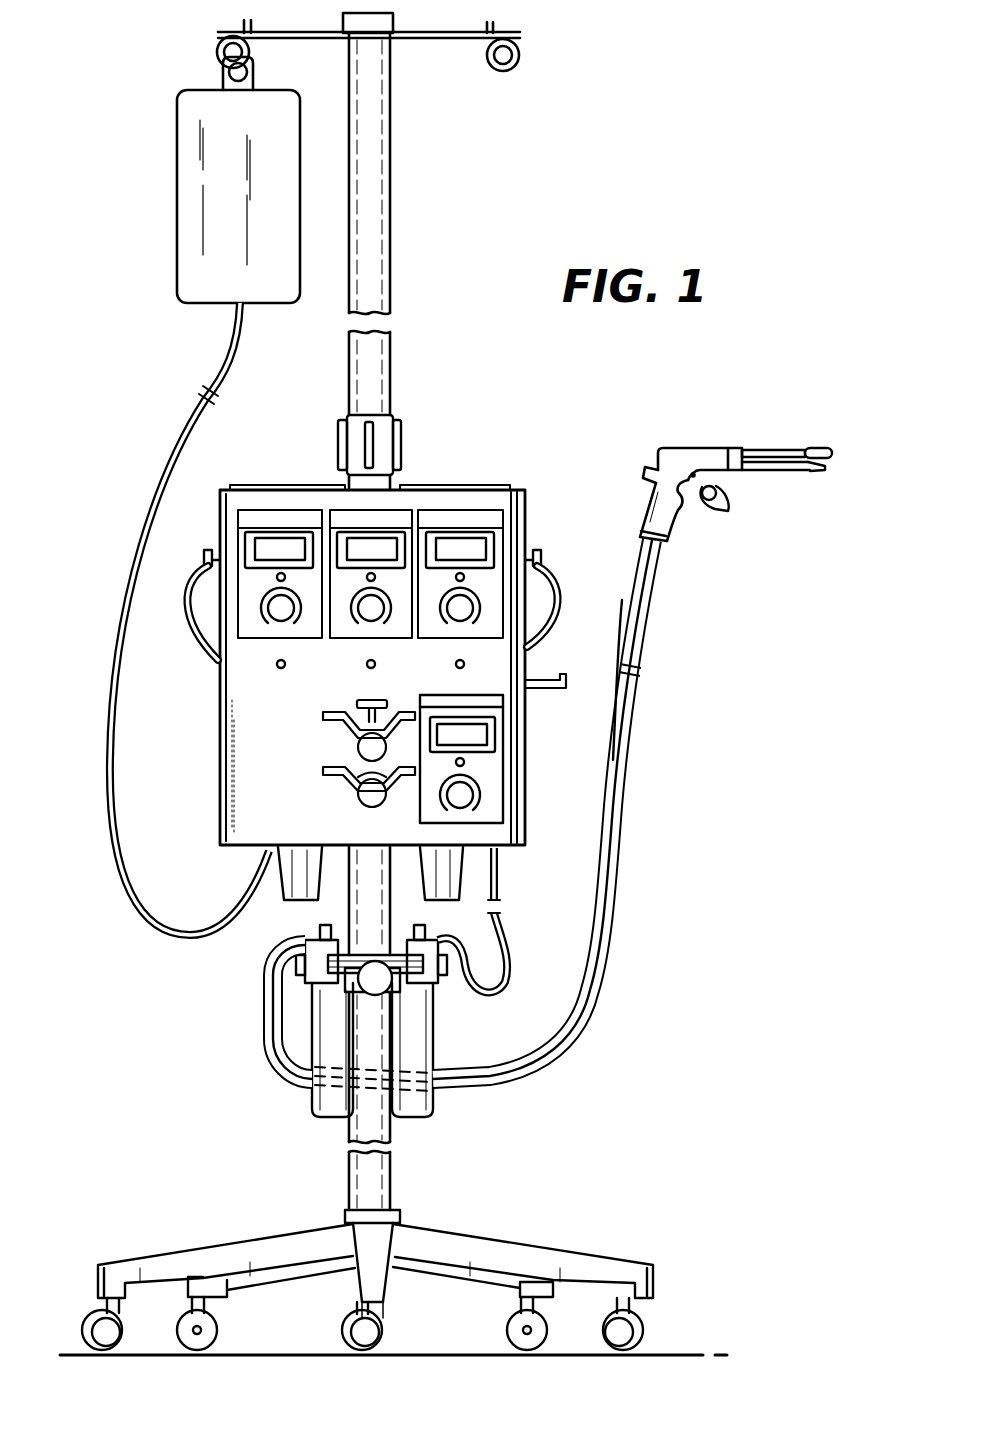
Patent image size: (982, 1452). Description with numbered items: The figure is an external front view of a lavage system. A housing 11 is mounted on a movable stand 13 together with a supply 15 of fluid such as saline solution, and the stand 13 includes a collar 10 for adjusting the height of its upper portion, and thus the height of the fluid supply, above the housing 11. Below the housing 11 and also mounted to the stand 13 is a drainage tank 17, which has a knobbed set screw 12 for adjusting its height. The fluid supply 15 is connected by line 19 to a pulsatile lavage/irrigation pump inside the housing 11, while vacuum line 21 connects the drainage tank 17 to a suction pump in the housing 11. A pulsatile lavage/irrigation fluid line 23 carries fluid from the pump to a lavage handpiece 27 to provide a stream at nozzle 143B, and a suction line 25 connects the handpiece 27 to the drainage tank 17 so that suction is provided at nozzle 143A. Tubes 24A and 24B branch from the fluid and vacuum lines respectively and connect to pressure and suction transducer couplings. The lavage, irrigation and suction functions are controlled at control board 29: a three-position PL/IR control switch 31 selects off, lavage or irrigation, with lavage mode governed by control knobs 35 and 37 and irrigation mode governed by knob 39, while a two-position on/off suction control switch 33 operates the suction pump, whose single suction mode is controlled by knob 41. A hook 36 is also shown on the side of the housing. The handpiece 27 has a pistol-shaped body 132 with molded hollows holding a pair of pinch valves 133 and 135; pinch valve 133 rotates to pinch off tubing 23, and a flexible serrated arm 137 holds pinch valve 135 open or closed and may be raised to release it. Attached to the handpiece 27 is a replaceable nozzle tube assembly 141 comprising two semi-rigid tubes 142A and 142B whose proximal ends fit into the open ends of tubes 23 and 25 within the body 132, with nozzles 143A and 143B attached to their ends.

The collar 10 is at (396, 418).
The housing 11 is at (478, 484).
The knobbed set screw 12 is at (380, 985).
The movable stand 13 is at (398, 236).
The fluid supply 15 is at (176, 156).
The drainage tank 17 is at (442, 1108).
The line 19 is at (182, 428).
The vacuum line 21 is at (511, 938).
The pulsatile lavage/irrigation fluid line 23 is at (645, 612).
The line 24A is at (190, 622).
The line 24B is at (560, 580).
The suction line 25 is at (621, 613).
The lavage handpiece 27 is at (738, 471).
The control board 29 is at (513, 528).
The PL/IR control switch 31 is at (366, 748).
The suction control switch 33 is at (375, 796).
The control knob 35 is at (283, 612).
The hook 36 is at (547, 695).
The control knob 37 is at (372, 612).
The knob 39 is at (460, 612).
The knob 41 is at (462, 794).
The pistol-shaped body 132 is at (678, 518).
The pinch valve 133 is at (726, 492).
The pinch valve 135 is at (648, 483).
The serrated arm 137 is at (655, 468).
The nozzle tube assembly 141 is at (805, 458).
The semi-rigid tube 142A is at (764, 450).
The semi-rigid tube 142B is at (793, 472).
The nozzle 143A is at (826, 448).
The nozzle 143B is at (822, 472).